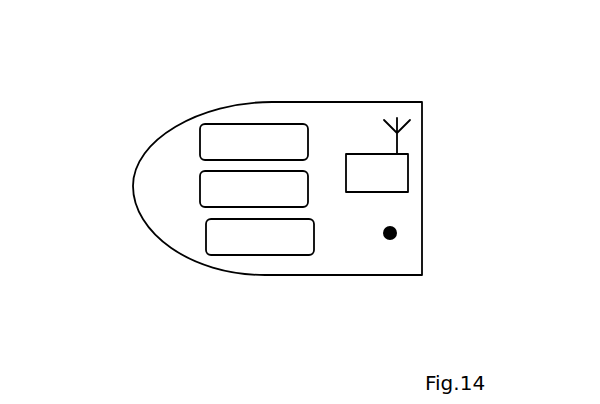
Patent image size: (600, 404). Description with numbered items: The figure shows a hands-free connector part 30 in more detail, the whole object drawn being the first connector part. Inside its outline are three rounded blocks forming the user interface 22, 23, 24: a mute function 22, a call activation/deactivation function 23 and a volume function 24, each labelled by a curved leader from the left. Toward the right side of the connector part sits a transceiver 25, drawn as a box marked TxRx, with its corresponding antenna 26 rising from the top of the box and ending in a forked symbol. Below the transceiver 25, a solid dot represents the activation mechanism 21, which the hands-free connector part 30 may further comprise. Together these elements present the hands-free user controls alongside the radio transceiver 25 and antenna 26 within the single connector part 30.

The hands-free connector part 30 is at (158, 83).
The mute function 22 is at (200, 142).
The call activation/deactivation function 23 is at (200, 190).
The volume function 24 is at (206, 237).
The transceiver 25 is at (408, 172).
The antenna 26 is at (390, 133).
The activation mechanism 21 is at (386, 241).